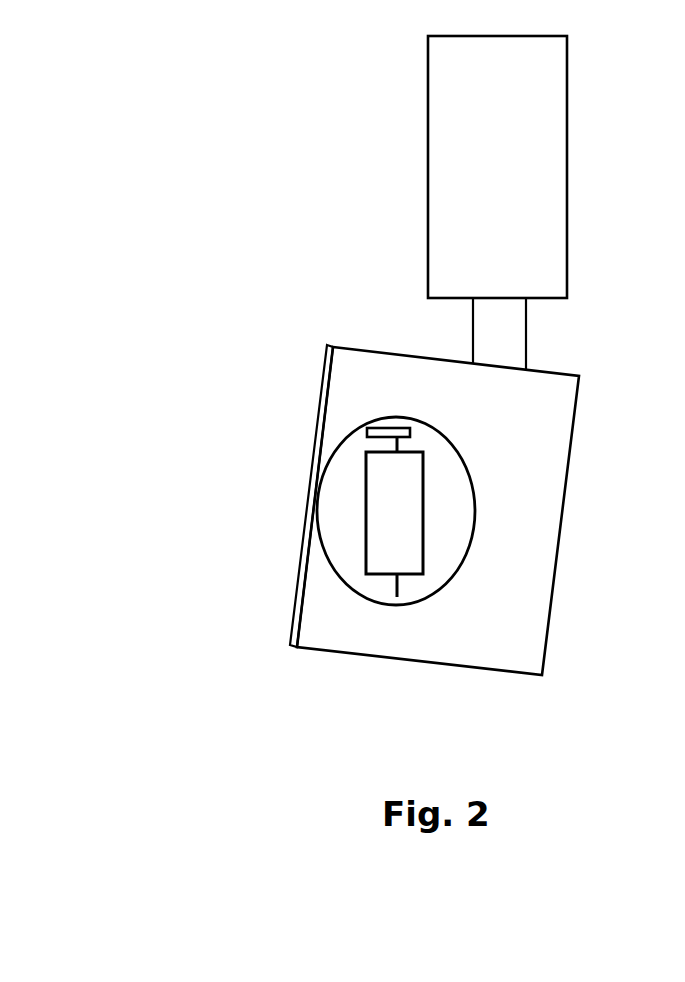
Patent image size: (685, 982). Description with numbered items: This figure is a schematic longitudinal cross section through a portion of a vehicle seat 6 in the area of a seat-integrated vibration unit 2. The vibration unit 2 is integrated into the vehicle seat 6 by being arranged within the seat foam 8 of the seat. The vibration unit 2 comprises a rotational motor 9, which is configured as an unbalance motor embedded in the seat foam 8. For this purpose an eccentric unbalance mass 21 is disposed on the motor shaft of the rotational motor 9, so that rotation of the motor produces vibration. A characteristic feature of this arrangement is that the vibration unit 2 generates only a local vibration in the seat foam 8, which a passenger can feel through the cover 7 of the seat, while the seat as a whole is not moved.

The vehicle seat 6 is at (285, 168).
The seat foam 8 is at (397, 617).
The cover 7 is at (298, 578).
The vibration unit 2 is at (327, 467).
The rotational motor 9 is at (411, 478).
The eccentric unbalance mass 21 is at (388, 427).